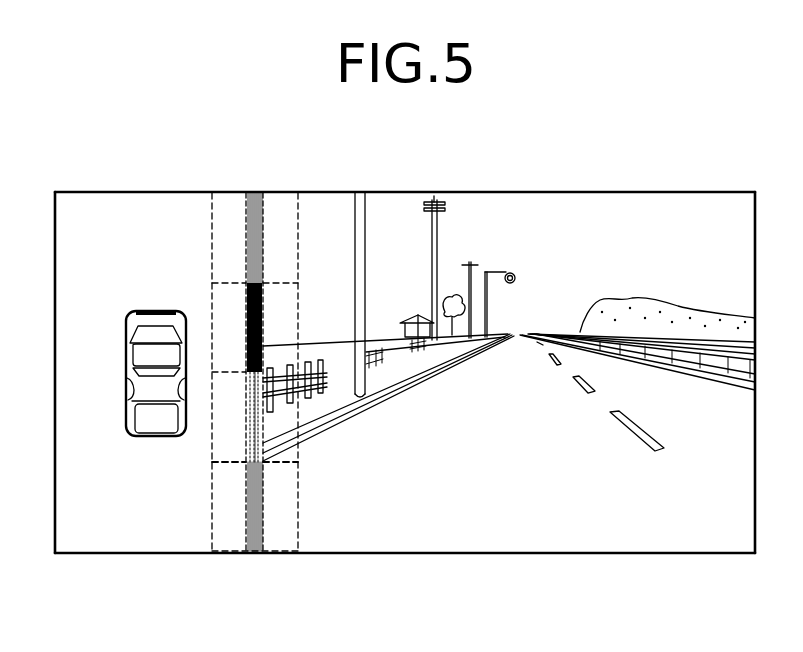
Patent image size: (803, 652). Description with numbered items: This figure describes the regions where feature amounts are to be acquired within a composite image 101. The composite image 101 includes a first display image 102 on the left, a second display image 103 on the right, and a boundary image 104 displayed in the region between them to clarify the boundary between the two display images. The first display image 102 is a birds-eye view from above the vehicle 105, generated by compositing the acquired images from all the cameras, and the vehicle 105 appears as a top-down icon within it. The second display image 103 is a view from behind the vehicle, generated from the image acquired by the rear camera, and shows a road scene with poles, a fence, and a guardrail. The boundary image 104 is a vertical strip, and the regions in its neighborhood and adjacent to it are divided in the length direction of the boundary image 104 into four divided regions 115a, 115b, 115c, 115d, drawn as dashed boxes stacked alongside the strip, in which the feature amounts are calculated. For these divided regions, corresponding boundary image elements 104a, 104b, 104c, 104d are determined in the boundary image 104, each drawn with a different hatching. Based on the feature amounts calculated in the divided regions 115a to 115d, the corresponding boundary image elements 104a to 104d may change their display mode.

The composite image 101 is at (480, 193).
The first display image 102 is at (102, 205).
The second display image 103 is at (692, 207).
The boundary image 104 is at (244, 517).
The boundary image element 104a is at (253, 254).
The boundary image element 104b is at (247, 312).
The boundary image element 104c is at (251, 428).
The boundary image element 104d is at (248, 472).
The vehicle 105 is at (144, 390).
The divided region 115a is at (267, 279).
The divided region 115b is at (295, 307).
The divided region 115c is at (298, 437).
The divided region 115d is at (293, 527).